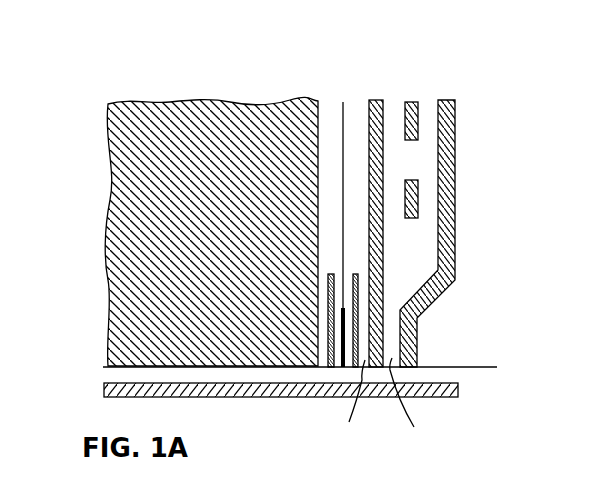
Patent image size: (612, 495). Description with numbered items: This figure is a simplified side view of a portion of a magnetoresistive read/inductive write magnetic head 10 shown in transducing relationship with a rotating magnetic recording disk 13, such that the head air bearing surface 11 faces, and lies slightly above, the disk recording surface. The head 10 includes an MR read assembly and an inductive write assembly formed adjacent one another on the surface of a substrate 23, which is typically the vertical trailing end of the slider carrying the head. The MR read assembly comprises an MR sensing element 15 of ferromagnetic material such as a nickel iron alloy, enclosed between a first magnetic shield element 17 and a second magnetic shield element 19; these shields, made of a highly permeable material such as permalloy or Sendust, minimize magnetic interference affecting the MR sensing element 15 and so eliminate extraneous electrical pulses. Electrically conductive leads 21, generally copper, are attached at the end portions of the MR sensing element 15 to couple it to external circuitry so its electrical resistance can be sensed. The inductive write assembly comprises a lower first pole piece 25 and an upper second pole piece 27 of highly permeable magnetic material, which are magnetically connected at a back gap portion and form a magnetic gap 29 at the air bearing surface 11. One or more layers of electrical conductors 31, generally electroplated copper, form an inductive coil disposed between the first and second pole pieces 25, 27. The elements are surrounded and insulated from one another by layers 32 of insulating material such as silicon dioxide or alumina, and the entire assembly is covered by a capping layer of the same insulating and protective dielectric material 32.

The magnetic head 10 is at (161, 82).
The air bearing surface 11 is at (482, 370).
The rotating magnetic recording disk 13 is at (442, 398).
The MR sensing element 15 is at (350, 360).
The first magnetic shield element 17 is at (326, 360).
The second magnetic shield element 19 is at (350, 404).
The electrically conductive leads 21 is at (341, 112).
The substrate 23 is at (118, 260).
The first pole piece 25 is at (376, 360).
The second pole piece 27 is at (425, 357).
The magnetic gap 29 is at (411, 405).
The electrical conductors 31 is at (418, 122).
The layers of insulating material 32 is at (357, 110).